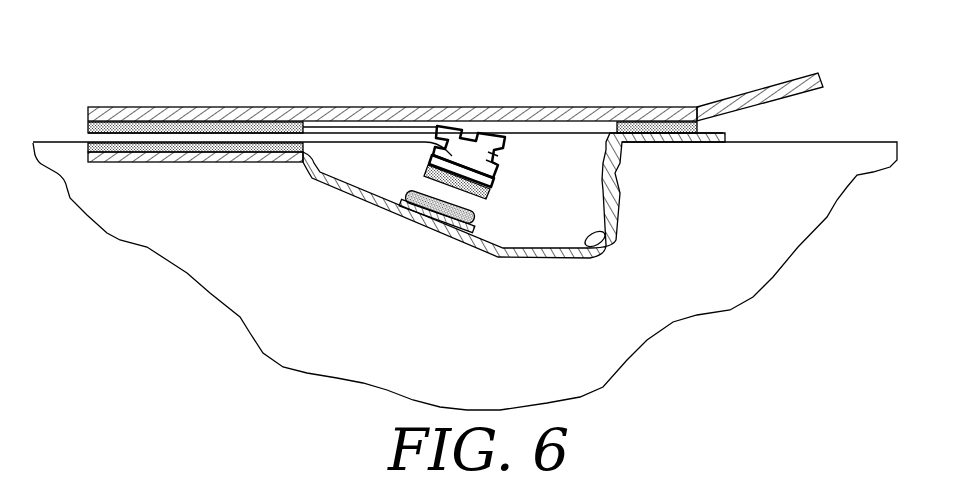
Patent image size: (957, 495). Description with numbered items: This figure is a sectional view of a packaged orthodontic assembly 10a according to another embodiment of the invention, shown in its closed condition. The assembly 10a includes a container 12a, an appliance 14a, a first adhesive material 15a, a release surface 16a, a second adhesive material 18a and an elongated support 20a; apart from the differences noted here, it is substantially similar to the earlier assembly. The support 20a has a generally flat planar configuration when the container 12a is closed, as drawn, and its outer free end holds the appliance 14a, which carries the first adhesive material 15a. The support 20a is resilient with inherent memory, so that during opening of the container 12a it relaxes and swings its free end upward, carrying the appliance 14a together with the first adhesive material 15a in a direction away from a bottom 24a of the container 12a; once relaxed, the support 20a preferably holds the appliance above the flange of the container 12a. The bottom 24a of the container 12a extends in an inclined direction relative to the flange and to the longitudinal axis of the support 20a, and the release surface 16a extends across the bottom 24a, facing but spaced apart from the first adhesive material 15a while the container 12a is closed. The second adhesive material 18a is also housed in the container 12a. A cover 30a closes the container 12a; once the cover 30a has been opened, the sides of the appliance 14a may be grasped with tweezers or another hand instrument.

The packaged orthodontic assembly 10a is at (175, 48).
The container 12a is at (316, 104).
The appliance 14a is at (512, 128).
The first adhesive material 15a is at (488, 194).
The release surface 16a is at (420, 218).
The second adhesive material 18a is at (455, 228).
The elongated support 20a is at (357, 152).
The bottom 24a is at (606, 237).
The cover 30a is at (621, 105).